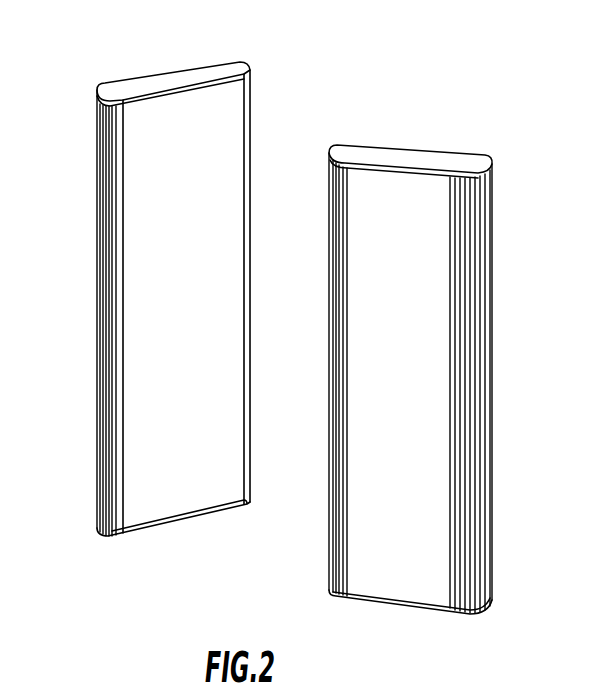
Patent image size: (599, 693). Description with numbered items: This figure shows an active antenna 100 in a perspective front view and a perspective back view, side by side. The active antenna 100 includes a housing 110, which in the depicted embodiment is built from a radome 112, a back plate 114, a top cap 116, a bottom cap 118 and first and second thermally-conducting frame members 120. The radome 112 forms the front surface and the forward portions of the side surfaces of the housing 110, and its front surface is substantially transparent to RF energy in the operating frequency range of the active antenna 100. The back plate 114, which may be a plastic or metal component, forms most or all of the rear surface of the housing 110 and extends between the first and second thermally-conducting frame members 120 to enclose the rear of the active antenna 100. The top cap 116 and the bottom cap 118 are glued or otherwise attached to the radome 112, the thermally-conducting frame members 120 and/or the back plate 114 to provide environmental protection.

The active antenna 100 is at (350, 128).
The housing 110 is at (88, 187).
The radome 112 is at (217, 230).
The back plate 114 is at (393, 580).
The top cap 116 is at (118, 90).
The bottom cap 118 is at (120, 534).
The thermally-conducting frame members 120 is at (492, 193).